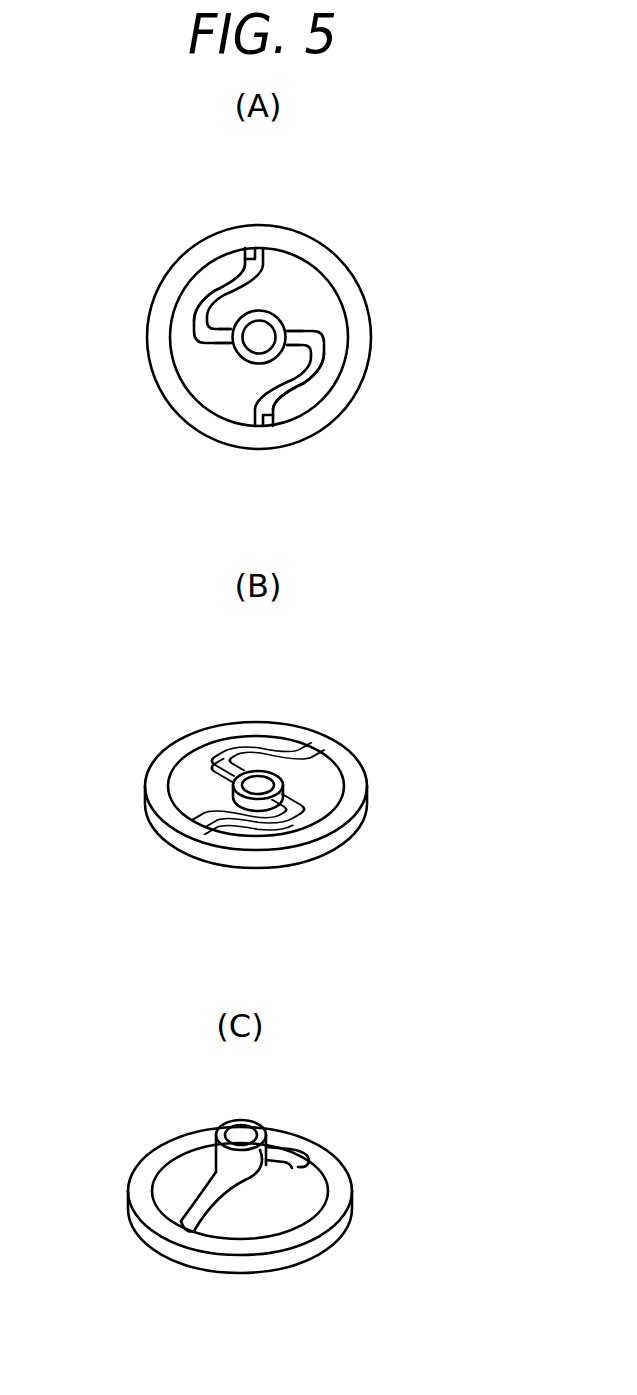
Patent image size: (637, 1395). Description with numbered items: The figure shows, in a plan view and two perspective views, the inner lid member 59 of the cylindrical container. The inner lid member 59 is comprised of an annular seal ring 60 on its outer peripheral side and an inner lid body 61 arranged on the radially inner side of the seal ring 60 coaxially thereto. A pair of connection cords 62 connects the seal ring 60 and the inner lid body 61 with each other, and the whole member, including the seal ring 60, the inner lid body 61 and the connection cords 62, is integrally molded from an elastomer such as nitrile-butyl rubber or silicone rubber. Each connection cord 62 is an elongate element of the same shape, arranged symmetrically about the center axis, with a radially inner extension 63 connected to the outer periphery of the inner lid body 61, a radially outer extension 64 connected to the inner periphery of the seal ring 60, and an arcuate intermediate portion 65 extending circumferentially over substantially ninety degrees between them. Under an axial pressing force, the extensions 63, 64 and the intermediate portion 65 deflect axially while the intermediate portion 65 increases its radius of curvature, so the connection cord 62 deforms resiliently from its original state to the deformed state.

The inner lid member 59 is at (260, 746).
The annular seal ring 60 is at (291, 749).
The inner lid body 61 is at (176, 742).
The connection cord 62 is at (263, 795).
The inner extension 63 is at (215, 291).
The outer extension 64 is at (277, 332).
The arcuate intermediate portion 65 is at (268, 333).